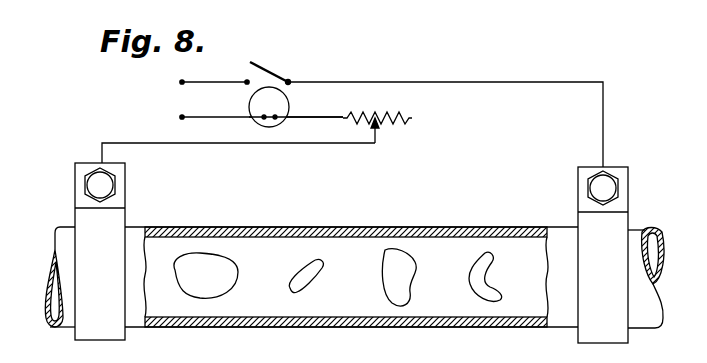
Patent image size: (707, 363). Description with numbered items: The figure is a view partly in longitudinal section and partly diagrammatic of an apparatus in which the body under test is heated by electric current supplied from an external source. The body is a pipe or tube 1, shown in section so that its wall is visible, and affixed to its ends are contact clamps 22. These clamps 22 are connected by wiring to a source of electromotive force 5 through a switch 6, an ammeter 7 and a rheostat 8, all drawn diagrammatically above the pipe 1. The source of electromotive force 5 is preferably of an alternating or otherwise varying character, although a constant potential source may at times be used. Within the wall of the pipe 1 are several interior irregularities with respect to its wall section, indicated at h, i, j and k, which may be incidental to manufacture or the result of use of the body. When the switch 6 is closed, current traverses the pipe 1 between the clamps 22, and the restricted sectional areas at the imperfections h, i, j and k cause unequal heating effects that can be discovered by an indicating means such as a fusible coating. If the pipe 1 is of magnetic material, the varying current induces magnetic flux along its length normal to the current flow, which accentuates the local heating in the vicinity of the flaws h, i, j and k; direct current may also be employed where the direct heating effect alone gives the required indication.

The pipe 1 is at (645, 230).
The source of electromotive force 5 is at (163, 97).
The switch 6 is at (268, 70).
The ammeter 7 is at (255, 114).
The rheostat 8 is at (385, 117).
The contact clamps 22 is at (125, 188).
The interior irregularity h is at (238, 268).
The interior irregularity i is at (322, 264).
The interior irregularity j is at (417, 270).
The interior irregularity k is at (493, 270).